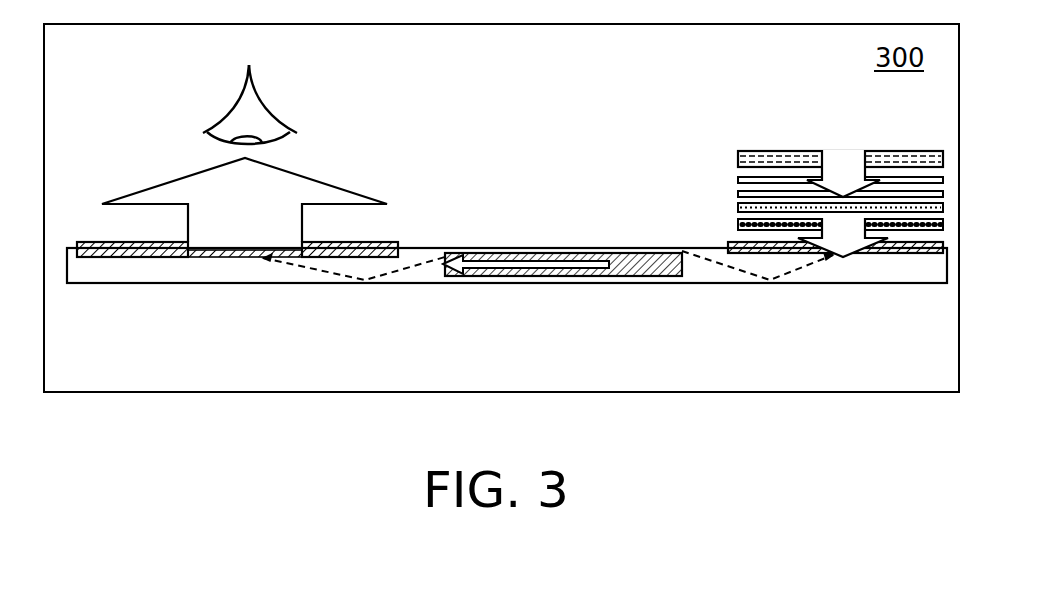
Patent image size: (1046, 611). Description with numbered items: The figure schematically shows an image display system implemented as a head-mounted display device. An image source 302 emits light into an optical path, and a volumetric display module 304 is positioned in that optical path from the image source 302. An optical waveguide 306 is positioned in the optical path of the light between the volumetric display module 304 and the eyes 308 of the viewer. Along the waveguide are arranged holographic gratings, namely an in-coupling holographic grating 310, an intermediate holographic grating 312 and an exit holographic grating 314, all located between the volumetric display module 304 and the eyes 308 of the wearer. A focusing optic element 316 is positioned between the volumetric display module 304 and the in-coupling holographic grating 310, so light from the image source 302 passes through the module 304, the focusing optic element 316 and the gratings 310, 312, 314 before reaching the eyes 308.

The image source 302 is at (757, 160).
The volumetric display module 304 is at (730, 190).
The optical waveguide 306 is at (160, 273).
The eyes 308 is at (253, 123).
The in-coupling holographic grating 310 is at (893, 245).
The intermediate holographic grating 312 is at (613, 257).
The exit holographic grating 314 is at (125, 243).
The focusing optic element 316 is at (738, 222).